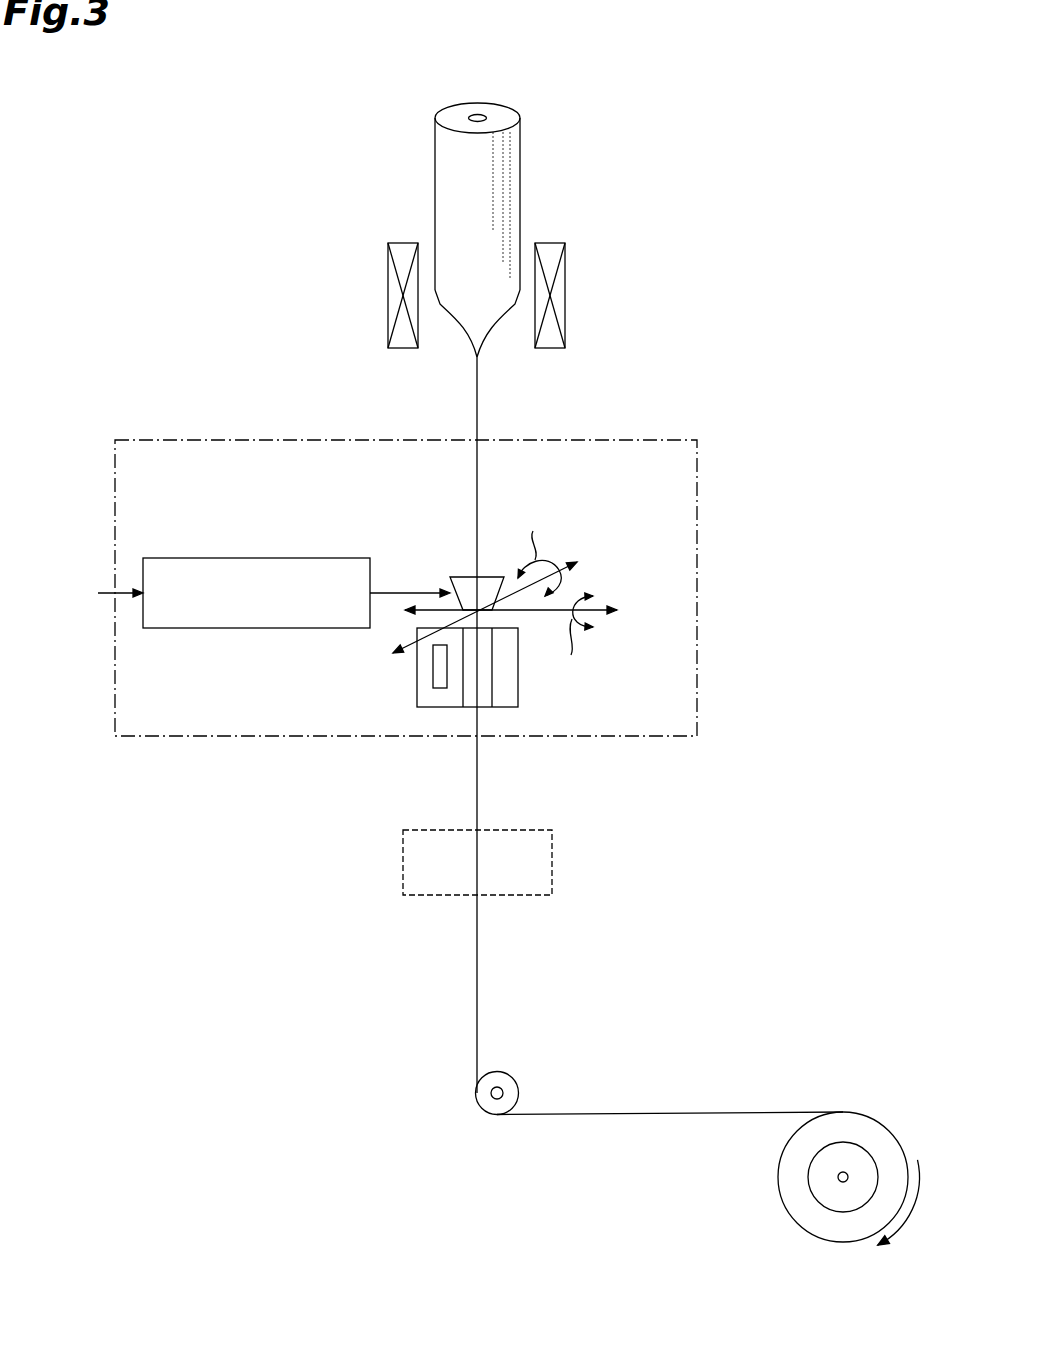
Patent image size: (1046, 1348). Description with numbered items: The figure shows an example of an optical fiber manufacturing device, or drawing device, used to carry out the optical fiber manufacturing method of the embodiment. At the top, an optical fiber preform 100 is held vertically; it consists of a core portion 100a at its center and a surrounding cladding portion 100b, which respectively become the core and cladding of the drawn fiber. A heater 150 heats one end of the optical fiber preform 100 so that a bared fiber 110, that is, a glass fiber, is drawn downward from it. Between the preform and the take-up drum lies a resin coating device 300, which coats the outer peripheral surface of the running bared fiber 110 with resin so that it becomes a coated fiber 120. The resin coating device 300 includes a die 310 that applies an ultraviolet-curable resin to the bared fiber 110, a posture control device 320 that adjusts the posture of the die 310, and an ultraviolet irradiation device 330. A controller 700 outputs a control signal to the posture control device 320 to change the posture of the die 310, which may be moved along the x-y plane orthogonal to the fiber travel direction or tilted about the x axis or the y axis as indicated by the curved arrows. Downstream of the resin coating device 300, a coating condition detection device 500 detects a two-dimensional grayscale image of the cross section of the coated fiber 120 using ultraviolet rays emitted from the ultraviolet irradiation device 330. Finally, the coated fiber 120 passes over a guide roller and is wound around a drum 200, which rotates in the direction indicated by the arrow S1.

The optical fiber preform 100 is at (505, 207).
The core portion 100a is at (477, 113).
The cladding portion 100b is at (447, 116).
The bared fiber 110 is at (480, 400).
The coated fiber 120 is at (480, 777).
The heater 150 is at (385, 284).
The drum 200 is at (856, 1127).
The resin coating device 300 is at (697, 497).
The die 310 is at (460, 576).
The posture control device 320 is at (285, 556).
The ultraviolet irradiation device 330 is at (415, 697).
The coating condition detection device 500 is at (553, 872).
The controller 700 is at (79, 596).
The arrow S1 is at (900, 1235).